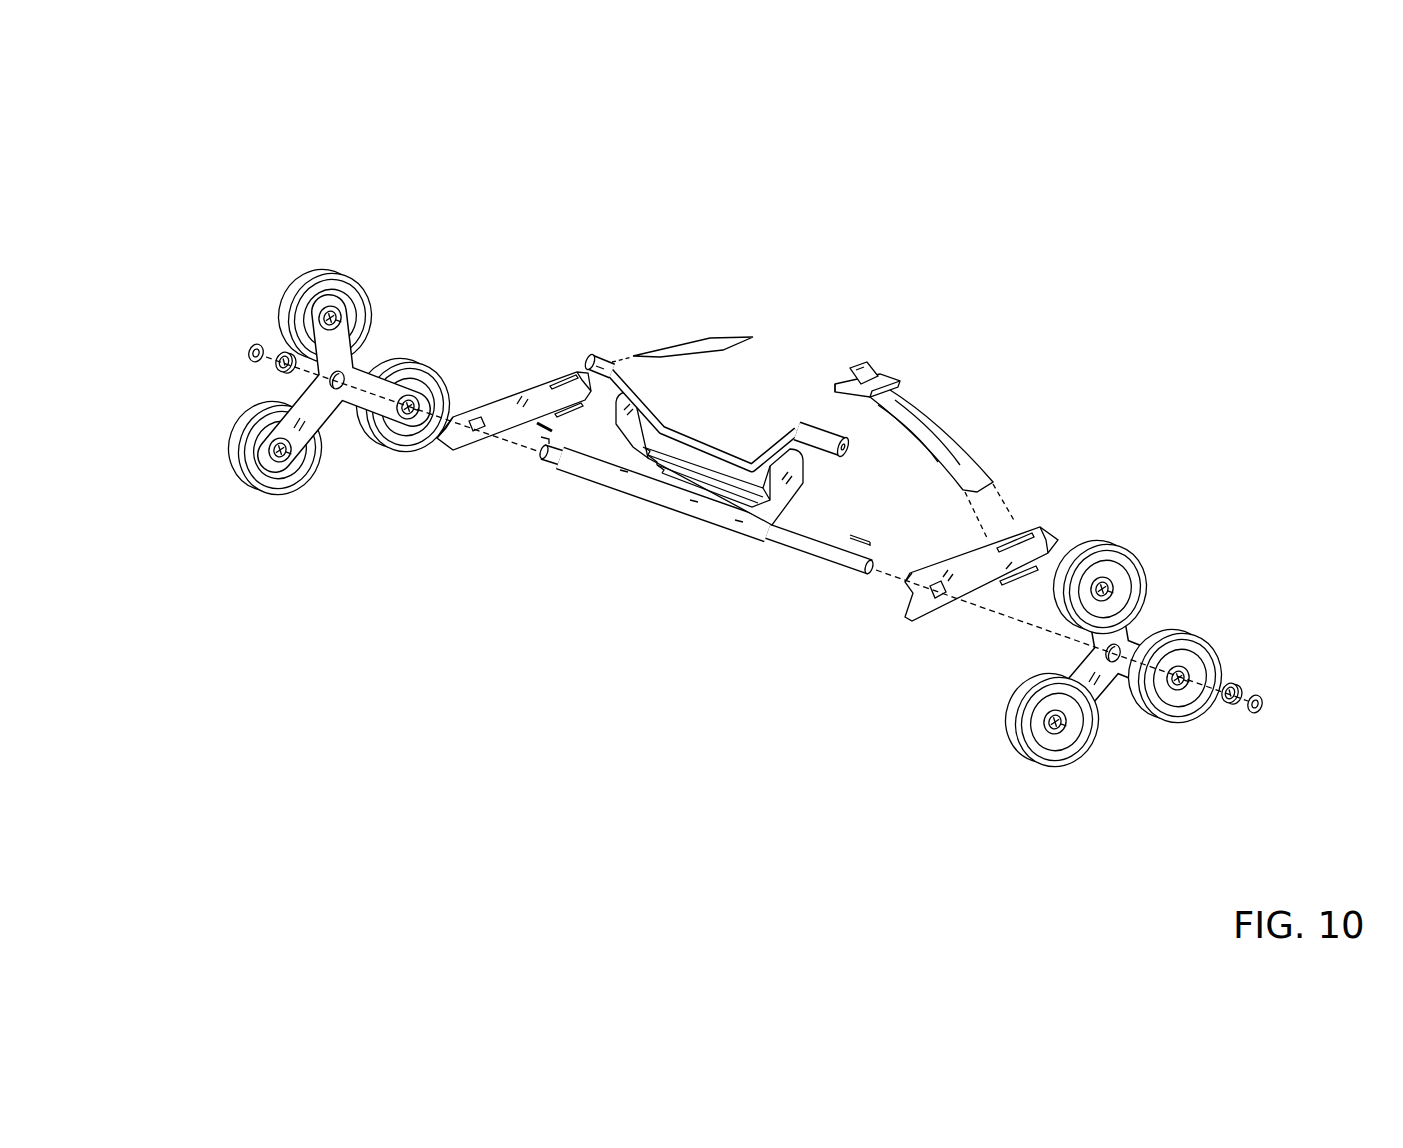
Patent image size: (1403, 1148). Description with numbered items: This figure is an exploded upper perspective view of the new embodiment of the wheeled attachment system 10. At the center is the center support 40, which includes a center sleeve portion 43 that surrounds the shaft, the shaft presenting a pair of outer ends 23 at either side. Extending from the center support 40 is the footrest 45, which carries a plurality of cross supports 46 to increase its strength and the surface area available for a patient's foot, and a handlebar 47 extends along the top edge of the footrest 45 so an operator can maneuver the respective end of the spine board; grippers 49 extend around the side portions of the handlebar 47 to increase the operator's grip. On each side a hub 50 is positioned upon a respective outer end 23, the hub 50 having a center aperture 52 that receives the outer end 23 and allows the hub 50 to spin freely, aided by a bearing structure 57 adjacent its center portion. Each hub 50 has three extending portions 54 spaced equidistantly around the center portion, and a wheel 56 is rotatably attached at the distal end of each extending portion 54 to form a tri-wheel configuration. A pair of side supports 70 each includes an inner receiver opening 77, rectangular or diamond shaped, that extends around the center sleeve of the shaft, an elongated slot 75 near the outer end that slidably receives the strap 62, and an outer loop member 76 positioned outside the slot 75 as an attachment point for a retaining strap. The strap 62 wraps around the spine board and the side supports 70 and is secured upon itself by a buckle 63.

The wheeled attachment system 10 is at (1232, 158).
The outer end 23 is at (546, 463).
The center support 40 is at (737, 536).
The center sleeve portion 43 is at (667, 512).
The footrest 45 is at (810, 477).
The cross supports 46 is at (653, 458).
The handlebar 47 is at (708, 432).
The grippers 49 is at (588, 357).
The hub 50 is at (323, 425).
The center aperture 52 is at (1133, 643).
The extending portions 54 is at (337, 293).
The wheels 56 is at (236, 428).
The bearing structure 57 is at (277, 345).
The strap 62 is at (718, 338).
The buckle 63 is at (878, 368).
The side supports 70 is at (518, 392).
The elongated slot 75 is at (567, 372).
The outer loop member 76 is at (1062, 555).
The inner receiver opening 77 is at (474, 445).